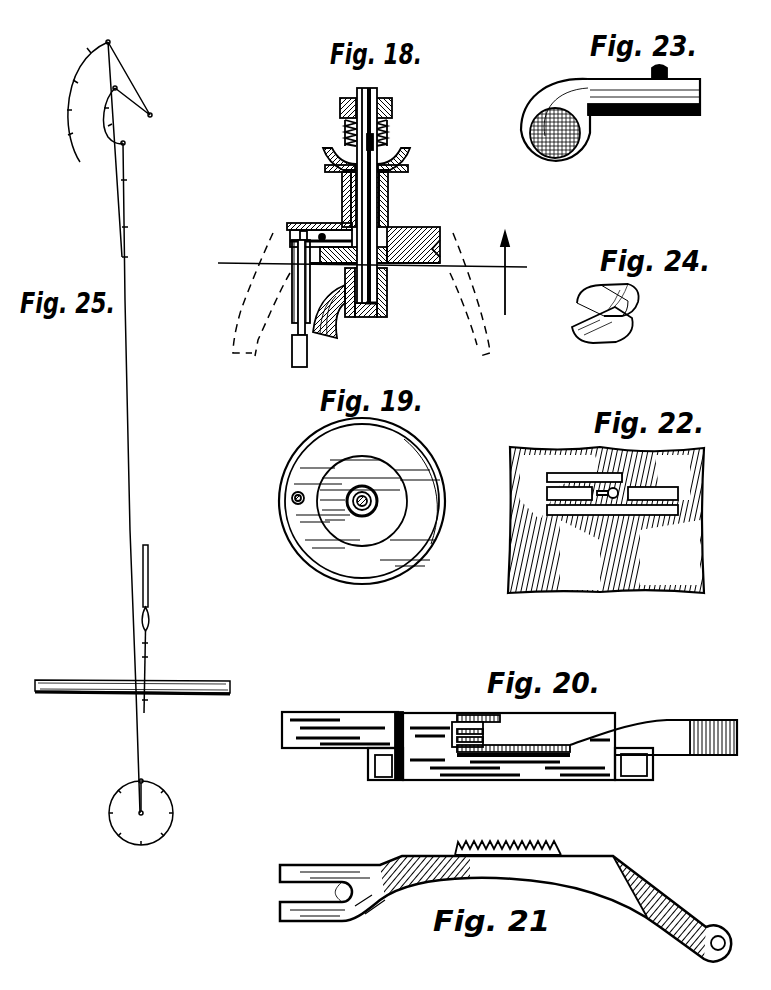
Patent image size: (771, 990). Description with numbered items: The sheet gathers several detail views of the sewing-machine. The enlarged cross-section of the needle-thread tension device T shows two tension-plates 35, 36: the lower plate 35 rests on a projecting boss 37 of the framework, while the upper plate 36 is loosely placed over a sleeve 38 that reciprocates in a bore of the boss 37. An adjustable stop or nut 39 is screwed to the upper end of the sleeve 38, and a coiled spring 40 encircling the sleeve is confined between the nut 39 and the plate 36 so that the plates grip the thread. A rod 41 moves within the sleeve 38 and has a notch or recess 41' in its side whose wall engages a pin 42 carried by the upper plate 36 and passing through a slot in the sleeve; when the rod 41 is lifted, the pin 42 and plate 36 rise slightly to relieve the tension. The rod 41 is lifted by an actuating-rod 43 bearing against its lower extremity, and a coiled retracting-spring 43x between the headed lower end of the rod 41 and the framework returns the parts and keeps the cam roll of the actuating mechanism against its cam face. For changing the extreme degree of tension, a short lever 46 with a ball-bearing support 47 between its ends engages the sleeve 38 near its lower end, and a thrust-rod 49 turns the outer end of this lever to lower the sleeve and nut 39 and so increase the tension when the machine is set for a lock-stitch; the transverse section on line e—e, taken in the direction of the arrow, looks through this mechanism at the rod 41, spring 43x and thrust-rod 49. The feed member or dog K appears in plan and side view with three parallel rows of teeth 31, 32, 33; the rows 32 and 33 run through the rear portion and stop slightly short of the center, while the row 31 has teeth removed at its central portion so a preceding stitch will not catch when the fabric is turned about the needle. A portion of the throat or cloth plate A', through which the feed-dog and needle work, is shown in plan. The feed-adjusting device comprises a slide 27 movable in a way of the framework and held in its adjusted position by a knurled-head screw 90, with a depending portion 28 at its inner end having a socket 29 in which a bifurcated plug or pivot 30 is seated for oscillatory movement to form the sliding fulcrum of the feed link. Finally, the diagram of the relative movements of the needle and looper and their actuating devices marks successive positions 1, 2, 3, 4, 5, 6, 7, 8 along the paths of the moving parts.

In FIG. 18, the rod 41 is at (385, 186).
In FIG. 19, the rod 41 is at (378, 507).
In FIG. 18, the adjustable stop or nut 39 is at (393, 108).
In FIG. 18, the pin 42 is at (345, 142).
In FIG. 18, the coiled spring 40 is at (386, 131).
In FIG. 18, the notch or recess 41' is at (417, 236).
In FIG. 18, the upper tension-plate 36 is at (411, 157).
In FIG. 18, the lower tension-plate 35 is at (326, 169).
In FIG. 18, the sleeve 38 is at (389, 196).
In FIG. 18, the boss 37 is at (386, 213).
In FIG. 18, the short lever 46 is at (300, 224).
In FIG. 18, the ball-bearing support 47 is at (322, 229).
In FIG. 18, the thrust-rod 49 is at (292, 354).
In FIG. 19, the thrust-rod 49 is at (295, 504).
In FIG. 18, the coiled retracting-spring 43x is at (390, 296).
In FIG. 19, the coiled retracting-spring 43x is at (369, 489).
In FIG. 18, the actuating-rod 43 is at (334, 340).
In FIG. 18, the tension device T is at (284, 142).
In FIG. 18, the section line e— e is at (370, 273).
In FIG. 23, the slide 27 is at (635, 116).
In FIG. 23, the depending portion 28 is at (567, 160).
In FIG. 23, the socket 29 is at (532, 140).
In FIG. 23, the screw 90 is at (668, 72).
In FIG. 24, the plug or pivot 30 is at (640, 313).
In FIG. 22, the fabric piece A' is at (625, 520).
In FIG. 20, the feed member or dog K is at (470, 806).
In FIG. 21, the feed member or dog K is at (505, 909).
In FIG. 20, the row of teeth 33 is at (478, 707).
In FIG. 20, the row of teeth 32 is at (484, 736).
In FIG. 20, the row of teeth 31 is at (545, 749).
In FIG. 21, the row of teeth 31 is at (537, 852).
In FIG. 25, the position 1 is at (133, 402).
In FIG. 25, the position 2 is at (122, 618).
In FIG. 25, the position 3 is at (94, 443).
In FIG. 25, the position 4 is at (86, 494).
In FIG. 25, the position 5 is at (112, 502).
In FIG. 25, the position 6 is at (125, 487).
In FIG. 25, the position 7 is at (133, 455).
In FIG. 25, the position 8 is at (135, 429).